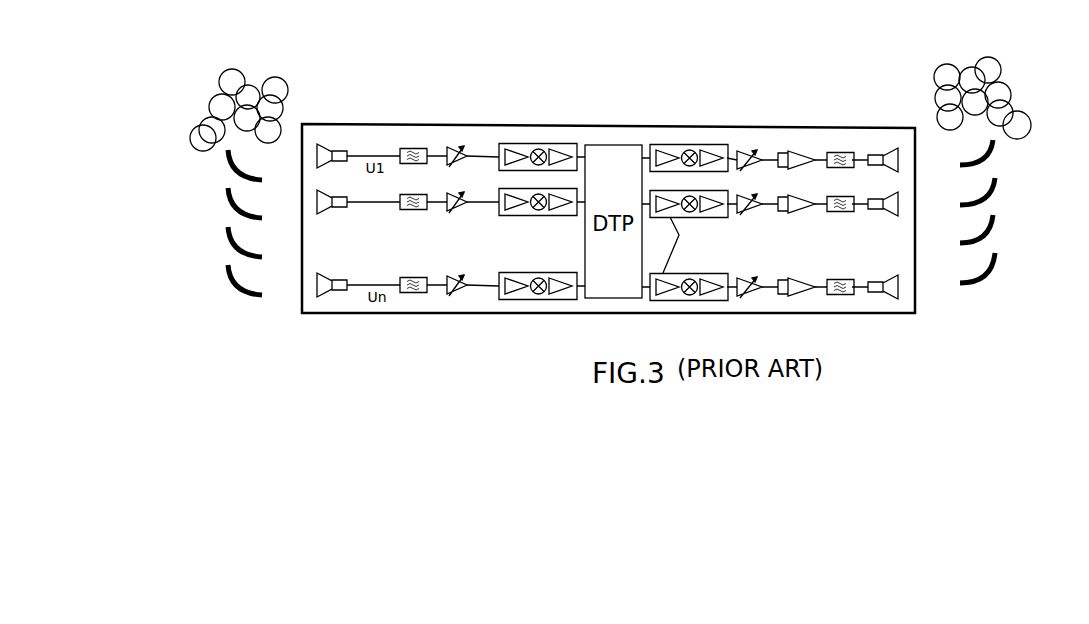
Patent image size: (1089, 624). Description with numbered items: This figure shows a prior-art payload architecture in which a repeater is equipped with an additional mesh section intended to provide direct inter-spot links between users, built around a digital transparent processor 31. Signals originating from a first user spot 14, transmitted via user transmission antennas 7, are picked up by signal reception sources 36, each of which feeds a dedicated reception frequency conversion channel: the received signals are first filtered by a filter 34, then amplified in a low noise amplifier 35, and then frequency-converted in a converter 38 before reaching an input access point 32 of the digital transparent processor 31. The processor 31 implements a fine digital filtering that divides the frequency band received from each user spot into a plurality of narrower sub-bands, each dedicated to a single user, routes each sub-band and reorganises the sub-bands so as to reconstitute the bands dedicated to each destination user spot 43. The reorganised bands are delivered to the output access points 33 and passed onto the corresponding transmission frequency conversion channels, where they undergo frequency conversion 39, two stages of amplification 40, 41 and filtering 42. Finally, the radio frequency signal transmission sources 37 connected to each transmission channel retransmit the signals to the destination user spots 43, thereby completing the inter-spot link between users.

The user transmission antenna 7 is at (237, 280).
The user spot 14 is at (283, 88).
The destination user spot 43 is at (997, 73).
The digital transparent processor 31 is at (607, 145).
The input access point 32 is at (580, 146).
The output access point 33 is at (647, 285).
The filter 34 is at (413, 148).
The low noise amplifier 35 is at (452, 147).
The signal reception source 36 is at (330, 143).
The radio frequency signal transmission source 37 is at (898, 160).
The converter 38 is at (520, 143).
The frequency conversion 39 is at (697, 145).
The amplification 40 is at (742, 152).
The amplification 41 is at (792, 153).
The filtering 42 is at (838, 153).